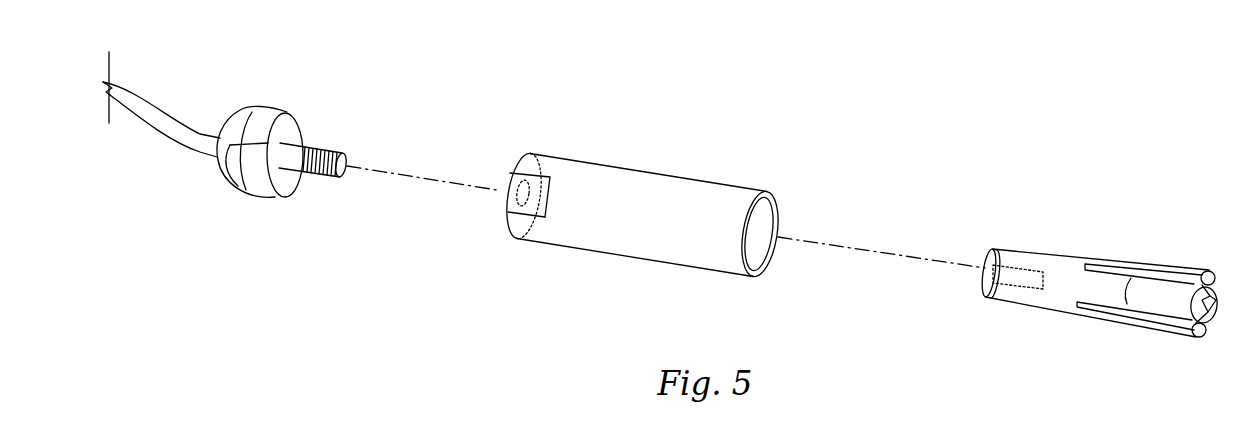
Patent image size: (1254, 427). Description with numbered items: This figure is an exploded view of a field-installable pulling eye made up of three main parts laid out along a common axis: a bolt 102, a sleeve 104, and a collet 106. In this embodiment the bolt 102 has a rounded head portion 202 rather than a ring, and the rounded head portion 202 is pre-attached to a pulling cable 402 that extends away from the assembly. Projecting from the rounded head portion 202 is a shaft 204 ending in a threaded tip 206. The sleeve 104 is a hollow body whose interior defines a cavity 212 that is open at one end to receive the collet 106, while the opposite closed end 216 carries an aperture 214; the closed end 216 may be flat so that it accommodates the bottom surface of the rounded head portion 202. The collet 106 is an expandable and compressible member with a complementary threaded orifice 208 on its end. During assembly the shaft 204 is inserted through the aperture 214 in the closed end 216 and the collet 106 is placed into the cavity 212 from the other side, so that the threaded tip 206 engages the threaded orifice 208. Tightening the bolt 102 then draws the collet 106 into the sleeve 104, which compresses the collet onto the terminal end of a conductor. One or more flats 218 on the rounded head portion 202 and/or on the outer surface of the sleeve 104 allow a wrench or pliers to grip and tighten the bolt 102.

The bolt 102 is at (280, 76).
The sleeve 104 is at (637, 133).
The collet 106 is at (1098, 222).
The rounded head portion 202 is at (235, 135).
The shaft 204 is at (300, 150).
The threaded tip 206 is at (325, 173).
The threaded orifice 208 is at (1018, 276).
The cavity 212 is at (758, 244).
The aperture 214 is at (521, 198).
The closed end 216 is at (506, 178).
The flats 218 is at (243, 165).
The pulling cable 402 is at (167, 133).